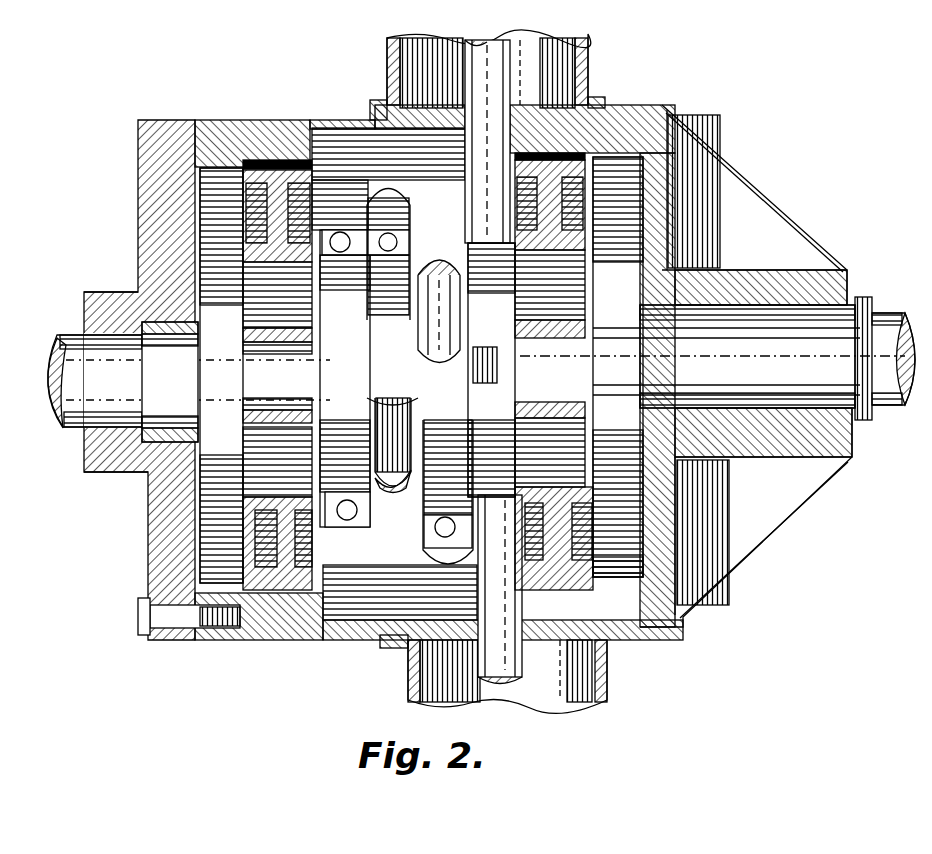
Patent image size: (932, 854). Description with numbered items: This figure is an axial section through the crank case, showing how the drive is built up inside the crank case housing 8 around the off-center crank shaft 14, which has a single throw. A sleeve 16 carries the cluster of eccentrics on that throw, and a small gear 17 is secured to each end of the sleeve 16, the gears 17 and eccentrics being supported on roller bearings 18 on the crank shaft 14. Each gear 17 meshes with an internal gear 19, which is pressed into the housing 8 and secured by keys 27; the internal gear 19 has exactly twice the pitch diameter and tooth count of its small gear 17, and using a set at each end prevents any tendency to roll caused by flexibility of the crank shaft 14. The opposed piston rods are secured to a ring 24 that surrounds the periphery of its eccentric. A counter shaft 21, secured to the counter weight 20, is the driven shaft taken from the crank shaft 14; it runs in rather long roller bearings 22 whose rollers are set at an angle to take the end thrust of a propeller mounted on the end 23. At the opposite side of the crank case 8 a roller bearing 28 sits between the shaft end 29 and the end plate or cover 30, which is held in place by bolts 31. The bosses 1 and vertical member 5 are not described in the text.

The bearing boss 1 is at (588, 58).
The vertical shaft 5 is at (505, 95).
The crank case housing 8 is at (262, 640).
The crank shaft 14 is at (575, 363).
The sleeve 16 is at (418, 428).
The gear 17 is at (320, 338).
The roller bearings 18 is at (245, 345).
The internal gear 19 is at (322, 585).
The counter weight 20 is at (208, 378).
The counter shaft 21 is at (762, 325).
The roller bearings 22 is at (725, 385).
The end 23 is at (885, 318).
The ring 24 is at (362, 235).
The keys 27 is at (290, 158).
The roller bearing 28 is at (144, 312).
The shaft end 29 is at (68, 370).
The end plate 30 is at (160, 546).
The bolts 31 is at (138, 616).